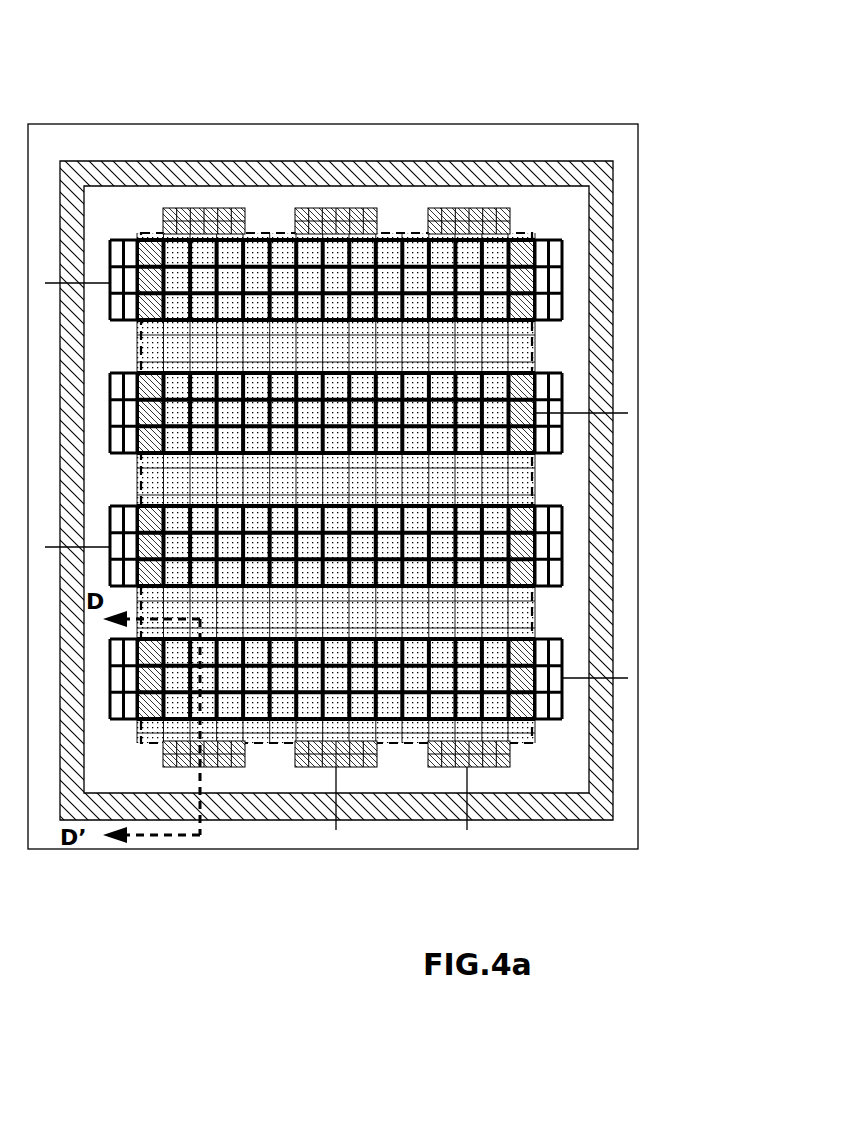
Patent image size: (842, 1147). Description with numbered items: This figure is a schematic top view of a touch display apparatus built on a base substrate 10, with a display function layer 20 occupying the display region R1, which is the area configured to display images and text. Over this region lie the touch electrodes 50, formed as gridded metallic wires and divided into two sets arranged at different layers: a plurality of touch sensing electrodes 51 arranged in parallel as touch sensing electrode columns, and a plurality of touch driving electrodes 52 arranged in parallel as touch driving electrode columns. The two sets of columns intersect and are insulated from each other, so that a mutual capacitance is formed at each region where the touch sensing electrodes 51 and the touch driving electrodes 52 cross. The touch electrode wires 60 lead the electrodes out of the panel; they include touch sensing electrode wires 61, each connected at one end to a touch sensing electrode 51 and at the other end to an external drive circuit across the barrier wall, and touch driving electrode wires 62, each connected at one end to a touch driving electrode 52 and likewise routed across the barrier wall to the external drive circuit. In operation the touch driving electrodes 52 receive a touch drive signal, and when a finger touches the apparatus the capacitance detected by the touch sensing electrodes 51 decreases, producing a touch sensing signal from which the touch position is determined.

The base substrate 10 is at (626, 243).
The display function layer 20 is at (525, 480).
The display region R1 is at (533, 340).
The touch electrodes 50 is at (336, 368).
The touch sensing electrodes 51 is at (336, 152).
The touch driving electrodes 52 is at (557, 243).
The touch electrode wires 60 is at (493, 733).
The touch sensing electrode wires 61 is at (467, 790).
The touch driving electrode wires 62 is at (620, 678).